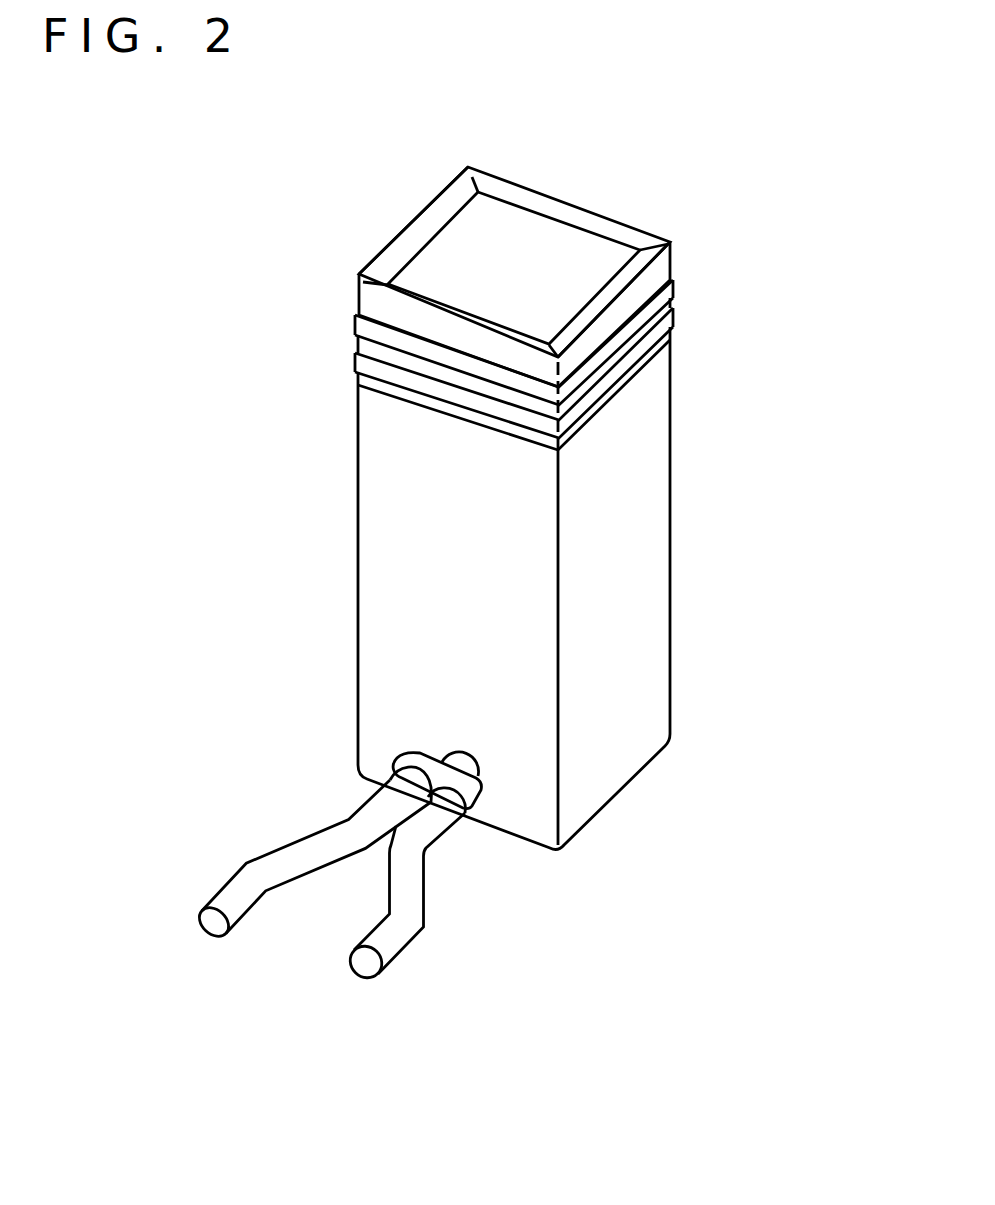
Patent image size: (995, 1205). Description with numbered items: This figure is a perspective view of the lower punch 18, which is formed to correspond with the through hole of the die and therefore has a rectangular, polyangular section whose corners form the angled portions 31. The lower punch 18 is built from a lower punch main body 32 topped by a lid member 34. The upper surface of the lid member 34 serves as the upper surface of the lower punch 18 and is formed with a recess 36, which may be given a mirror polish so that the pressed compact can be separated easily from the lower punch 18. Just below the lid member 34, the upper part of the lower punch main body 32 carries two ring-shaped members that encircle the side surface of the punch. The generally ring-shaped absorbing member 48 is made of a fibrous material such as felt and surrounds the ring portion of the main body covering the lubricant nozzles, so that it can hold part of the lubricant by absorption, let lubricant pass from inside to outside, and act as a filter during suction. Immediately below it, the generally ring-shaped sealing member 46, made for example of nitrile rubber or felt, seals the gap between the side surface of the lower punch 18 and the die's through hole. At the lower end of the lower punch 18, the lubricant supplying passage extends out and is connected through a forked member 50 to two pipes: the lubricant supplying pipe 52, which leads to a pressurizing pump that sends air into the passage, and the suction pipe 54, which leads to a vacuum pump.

The lower punch 18 is at (318, 472).
The angled portions 31 is at (467, 165).
The lower punch main body 32 is at (372, 573).
The lid member 34 is at (425, 213).
The recess 36 is at (577, 248).
The sealing member 46 is at (672, 325).
The absorbing member 48 is at (672, 292).
The forked member 50 is at (477, 807).
The lubricant supplying pipe 52 is at (227, 897).
The suction pipe 54 is at (393, 940).